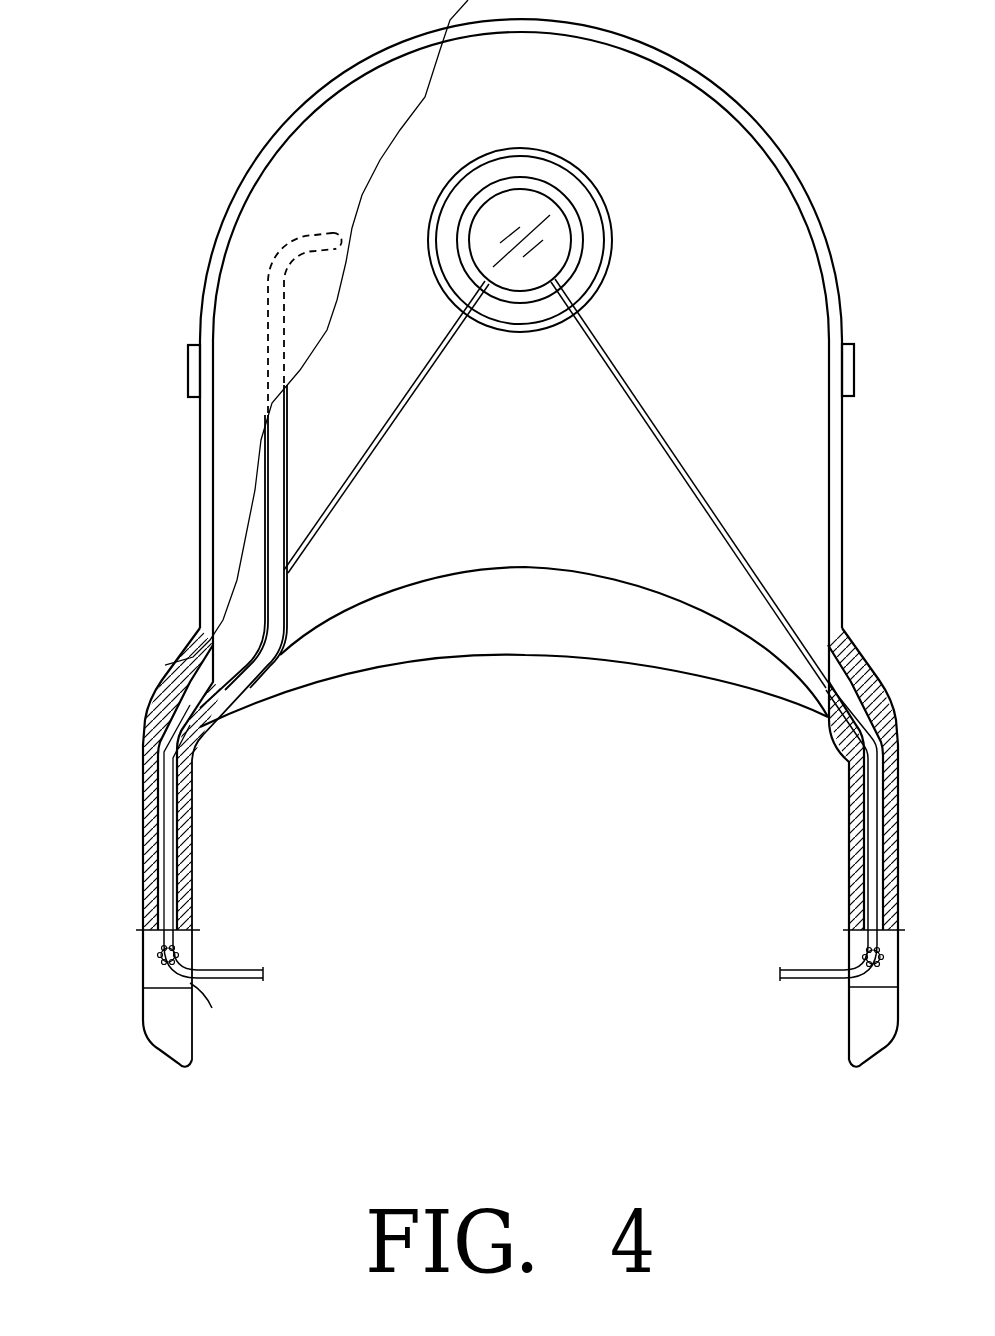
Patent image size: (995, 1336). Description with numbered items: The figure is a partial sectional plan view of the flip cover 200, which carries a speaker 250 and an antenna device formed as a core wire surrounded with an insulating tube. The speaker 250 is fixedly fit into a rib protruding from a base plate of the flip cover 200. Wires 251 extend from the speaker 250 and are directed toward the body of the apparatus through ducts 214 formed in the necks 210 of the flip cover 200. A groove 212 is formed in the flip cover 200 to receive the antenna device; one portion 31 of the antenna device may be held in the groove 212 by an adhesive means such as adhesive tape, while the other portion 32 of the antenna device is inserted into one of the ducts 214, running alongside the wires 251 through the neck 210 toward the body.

The flip cover 200 is at (510, 690).
The neck 210 is at (160, 728).
The groove 212 is at (285, 418).
The duct 214 is at (192, 828).
The speaker 250 is at (560, 248).
The wires 251 is at (412, 403).
The portion of the antenna device 31 is at (278, 492).
The other portion of the antenna device 32 is at (168, 848).